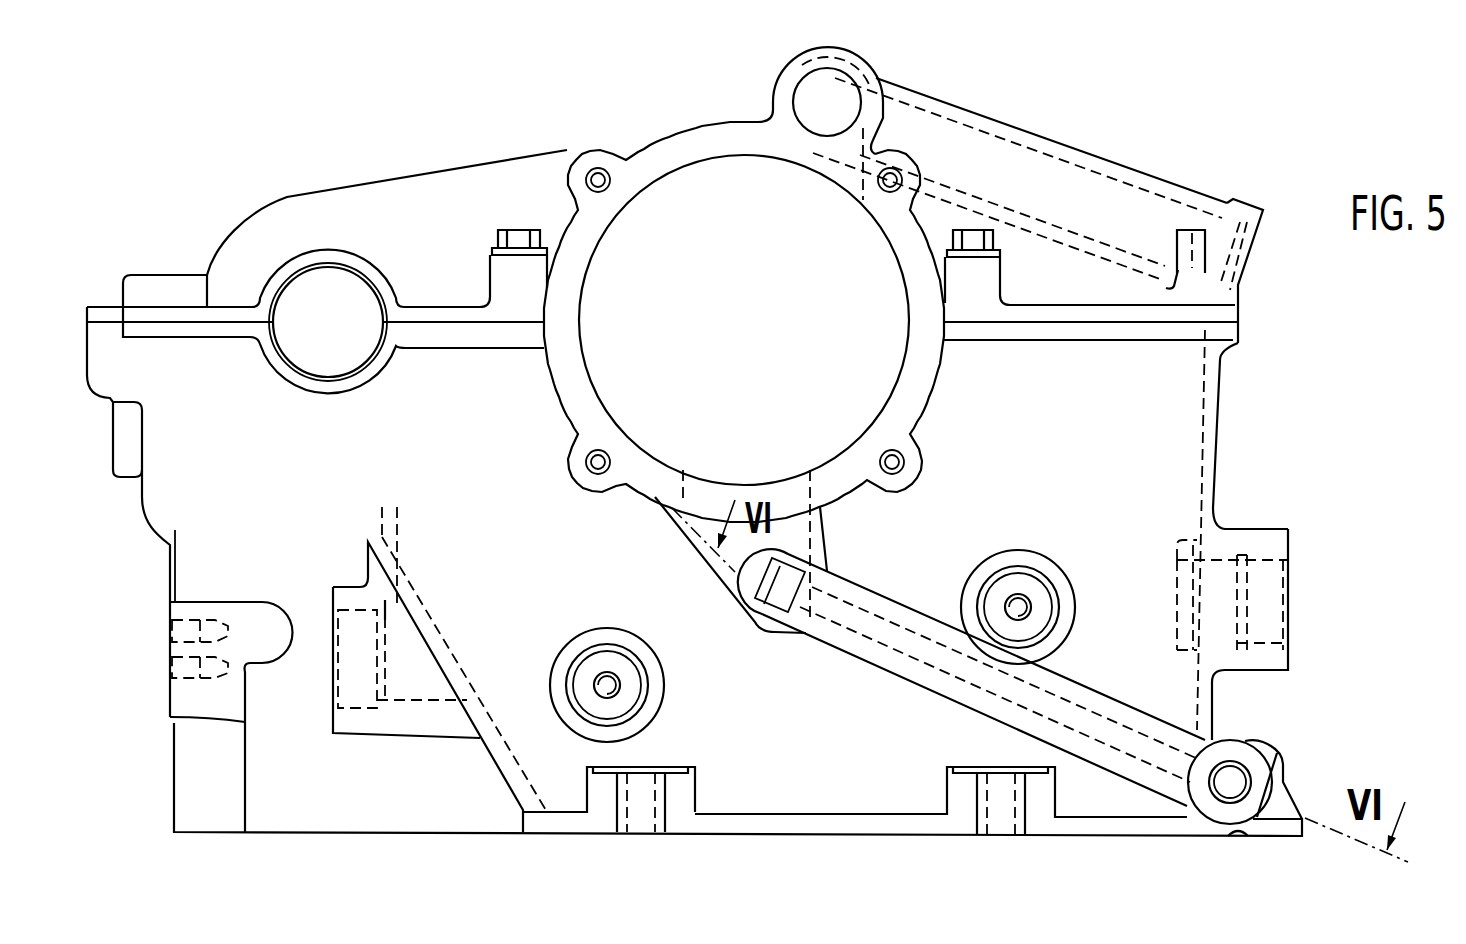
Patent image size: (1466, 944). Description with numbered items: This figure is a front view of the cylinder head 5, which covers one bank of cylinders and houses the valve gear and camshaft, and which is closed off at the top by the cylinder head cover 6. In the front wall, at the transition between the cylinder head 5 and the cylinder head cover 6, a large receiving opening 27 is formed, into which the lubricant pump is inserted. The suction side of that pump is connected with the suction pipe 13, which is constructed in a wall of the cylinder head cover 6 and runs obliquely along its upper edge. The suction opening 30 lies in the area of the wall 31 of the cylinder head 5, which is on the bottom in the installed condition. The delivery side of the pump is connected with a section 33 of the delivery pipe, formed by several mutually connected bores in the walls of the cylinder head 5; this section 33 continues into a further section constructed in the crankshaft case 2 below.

The crankshaft case 2 is at (1221, 382).
The cylinder head 5 is at (1160, 472).
The cylinder head cover 6 is at (1097, 141).
The suction pipe 13 is at (1132, 213).
The receiving opening 27 is at (612, 232).
The suction opening 30 is at (1192, 270).
The wall 31 is at (1229, 510).
The section of the delivery pipe 33 is at (1090, 718).